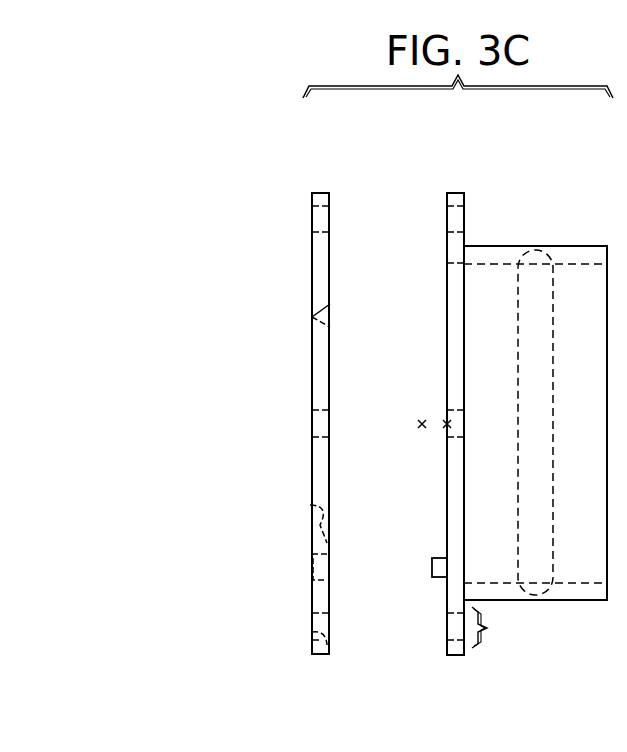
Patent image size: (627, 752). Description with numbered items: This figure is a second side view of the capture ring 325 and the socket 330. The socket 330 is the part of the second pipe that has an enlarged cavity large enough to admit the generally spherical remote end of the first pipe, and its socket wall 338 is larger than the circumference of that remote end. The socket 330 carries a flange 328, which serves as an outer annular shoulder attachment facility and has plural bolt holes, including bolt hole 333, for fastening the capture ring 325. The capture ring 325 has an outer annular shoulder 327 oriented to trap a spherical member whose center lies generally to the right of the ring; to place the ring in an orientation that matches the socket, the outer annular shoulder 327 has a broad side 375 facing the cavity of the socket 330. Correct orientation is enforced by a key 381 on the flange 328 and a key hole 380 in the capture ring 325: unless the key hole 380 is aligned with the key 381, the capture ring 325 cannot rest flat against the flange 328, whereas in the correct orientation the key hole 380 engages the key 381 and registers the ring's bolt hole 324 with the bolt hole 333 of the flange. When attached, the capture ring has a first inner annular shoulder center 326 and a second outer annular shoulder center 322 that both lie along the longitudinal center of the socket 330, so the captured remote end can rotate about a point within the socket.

The capture ring 325 is at (318, 186).
The flange 328 is at (476, 185).
The socket 330 is at (525, 208).
The socket wall 338 is at (573, 262).
The broad side 375 is at (330, 304).
The outer annular shoulder 327 is at (330, 327).
The second outer annular shoulder center 322 is at (420, 424).
The first inner annular shoulder center 326 is at (447, 424).
The key 381 is at (432, 568).
The key hole 380 is at (313, 575).
The bolt hole 324 is at (312, 632).
The bolt hole 333 is at (503, 627).